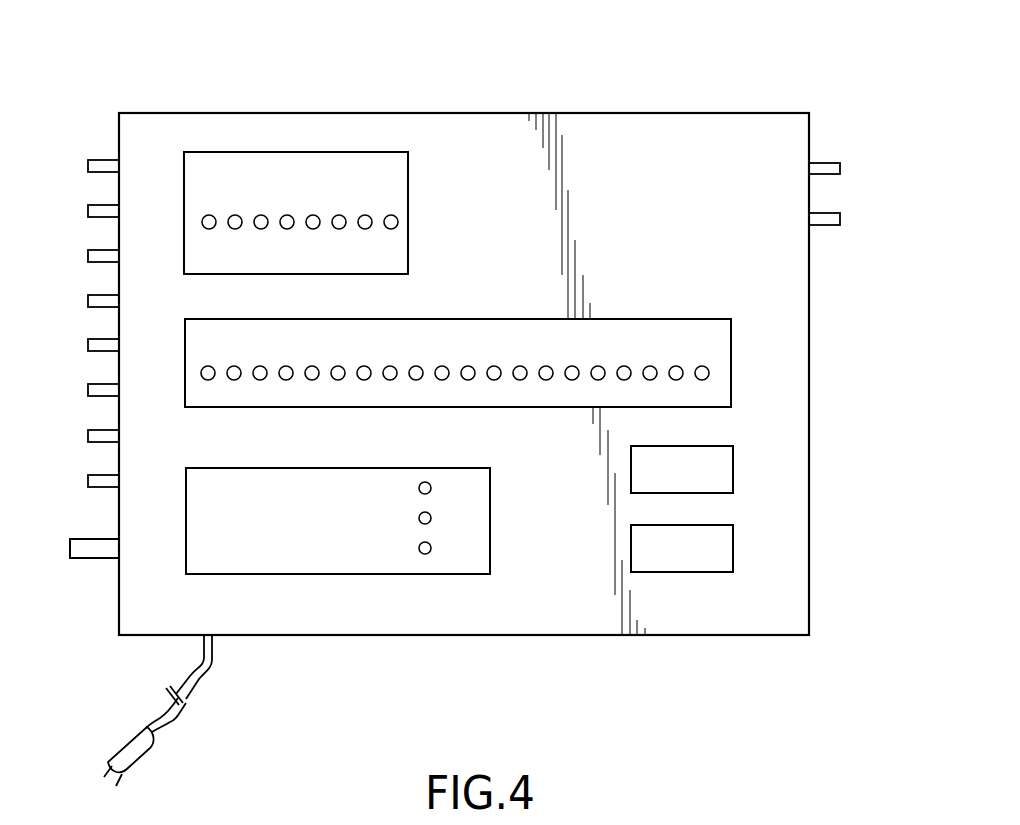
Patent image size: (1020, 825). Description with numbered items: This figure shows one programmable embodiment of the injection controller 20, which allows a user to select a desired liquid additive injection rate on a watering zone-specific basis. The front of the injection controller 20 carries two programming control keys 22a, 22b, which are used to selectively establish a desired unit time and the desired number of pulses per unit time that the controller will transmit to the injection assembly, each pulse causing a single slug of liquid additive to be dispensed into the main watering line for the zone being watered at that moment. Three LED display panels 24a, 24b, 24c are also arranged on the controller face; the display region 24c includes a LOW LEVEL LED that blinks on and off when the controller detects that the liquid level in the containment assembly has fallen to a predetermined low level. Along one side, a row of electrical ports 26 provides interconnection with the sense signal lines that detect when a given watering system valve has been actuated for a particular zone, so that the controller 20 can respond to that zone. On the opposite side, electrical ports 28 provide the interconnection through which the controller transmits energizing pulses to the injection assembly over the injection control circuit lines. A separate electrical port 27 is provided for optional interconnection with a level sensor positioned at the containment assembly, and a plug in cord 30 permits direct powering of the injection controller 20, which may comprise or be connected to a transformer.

The injection controller 20 is at (710, 117).
The programming control key 22a is at (733, 466).
The programming control key 22b is at (733, 547).
The LED display panel 24a is at (202, 158).
The LED display panel 24b is at (479, 327).
The LED display panel 24c is at (468, 558).
The electrical ports 26 is at (74, 508).
The electrical port 27 is at (85, 560).
The electrical ports 28 is at (848, 135).
The plug in cord 30 is at (213, 665).